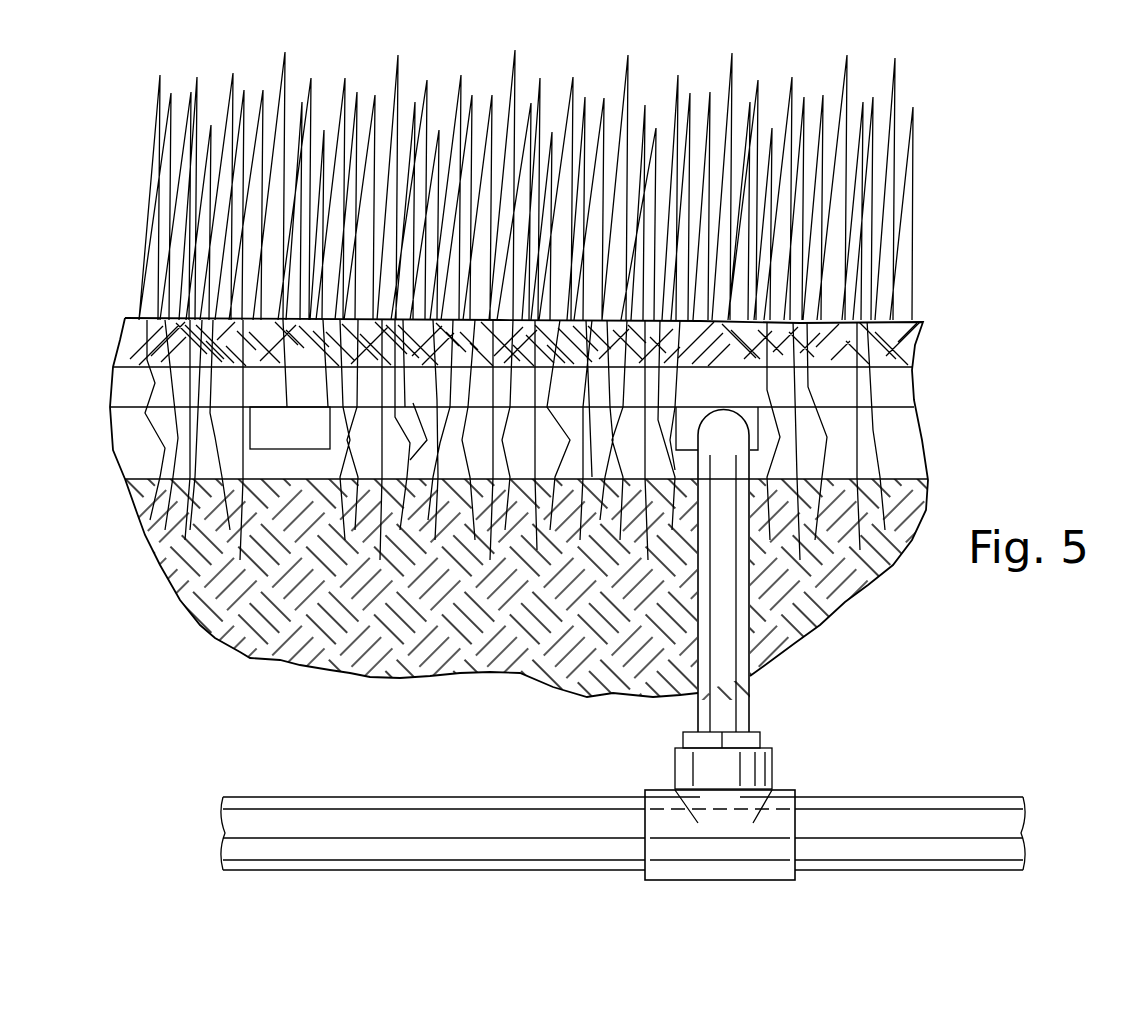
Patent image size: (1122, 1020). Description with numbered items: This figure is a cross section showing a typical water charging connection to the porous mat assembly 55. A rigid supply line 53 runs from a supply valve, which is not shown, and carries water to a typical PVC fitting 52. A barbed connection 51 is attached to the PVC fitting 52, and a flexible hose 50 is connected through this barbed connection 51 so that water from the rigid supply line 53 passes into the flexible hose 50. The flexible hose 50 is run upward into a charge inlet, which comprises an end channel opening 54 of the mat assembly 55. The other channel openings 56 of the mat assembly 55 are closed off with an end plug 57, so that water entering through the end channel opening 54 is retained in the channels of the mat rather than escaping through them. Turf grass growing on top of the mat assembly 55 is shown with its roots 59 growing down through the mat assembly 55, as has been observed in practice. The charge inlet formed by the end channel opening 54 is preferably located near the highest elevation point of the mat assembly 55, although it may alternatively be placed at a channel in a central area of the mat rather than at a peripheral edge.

The flexible hose 50 is at (787, 648).
The barbed connection 51 is at (760, 742).
The PVC fitting 52 is at (683, 777).
The rigid supply line 53 is at (938, 823).
The end channel opening 54 is at (687, 427).
The mat assembly 55 is at (873, 460).
The channel openings 56 is at (250, 420).
The end plug 57 is at (273, 440).
The roots 59 is at (357, 343).